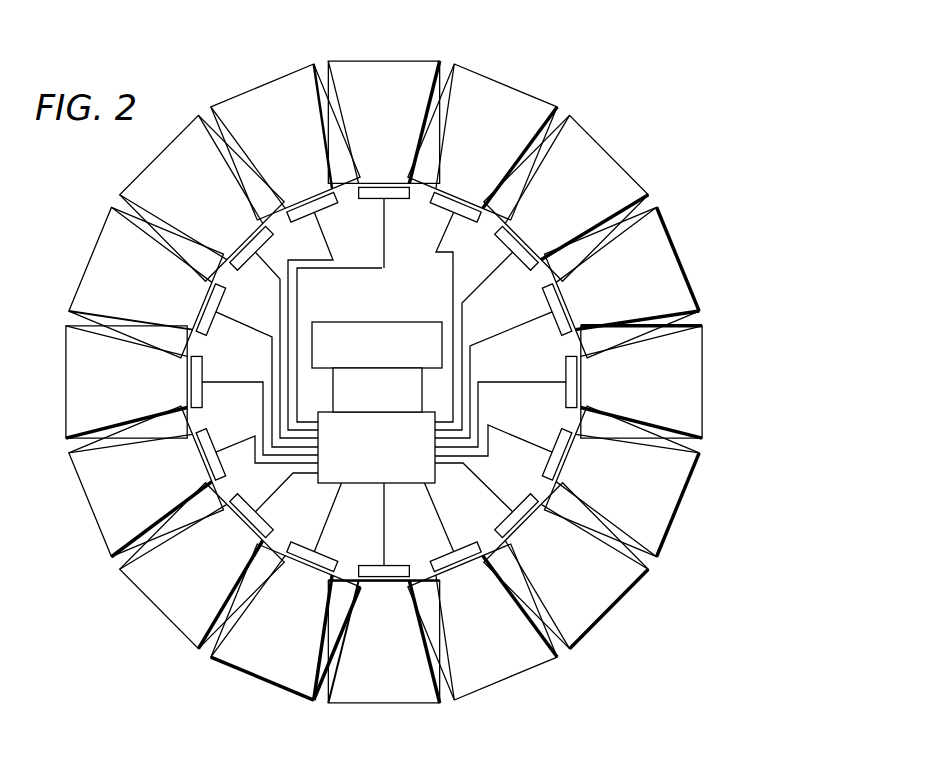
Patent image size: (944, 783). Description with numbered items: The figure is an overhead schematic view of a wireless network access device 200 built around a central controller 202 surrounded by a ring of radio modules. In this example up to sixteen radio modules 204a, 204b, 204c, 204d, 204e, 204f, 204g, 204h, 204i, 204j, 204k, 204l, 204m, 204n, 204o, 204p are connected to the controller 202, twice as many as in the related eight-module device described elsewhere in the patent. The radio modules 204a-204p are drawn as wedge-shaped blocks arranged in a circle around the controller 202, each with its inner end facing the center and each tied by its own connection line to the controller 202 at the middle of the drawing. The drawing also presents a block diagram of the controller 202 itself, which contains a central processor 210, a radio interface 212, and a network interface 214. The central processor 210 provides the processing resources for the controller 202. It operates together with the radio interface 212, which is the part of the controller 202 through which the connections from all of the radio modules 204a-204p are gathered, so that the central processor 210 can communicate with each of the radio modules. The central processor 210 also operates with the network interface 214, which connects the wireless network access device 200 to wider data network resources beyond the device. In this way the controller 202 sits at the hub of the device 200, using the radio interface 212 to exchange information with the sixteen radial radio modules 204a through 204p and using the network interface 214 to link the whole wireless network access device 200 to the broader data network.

The wireless network access device 200 is at (622, 88).
The controller 202 is at (445, 308).
The radio module 204a is at (359, 129).
The radio module 204b is at (456, 135).
The radio module 204c is at (557, 192).
The radio module 204d is at (604, 293).
The radio module 204e is at (639, 396).
The radio module 204f is at (605, 497).
The radio module 204g is at (551, 586).
The radio module 204h is at (464, 648).
The radio module 204i is at (360, 677).
The radio module 204j is at (253, 647).
The radio module 204k is at (166, 582).
The radio module 204l is at (106, 490).
The radio module 204m is at (86, 390).
The radio module 204n is at (107, 283).
The radio module 204o is at (166, 192).
The radio module 204p is at (256, 130).
The central processor 210 is at (417, 402).
The radio interface 212 is at (394, 472).
The network interface 214 is at (435, 355).